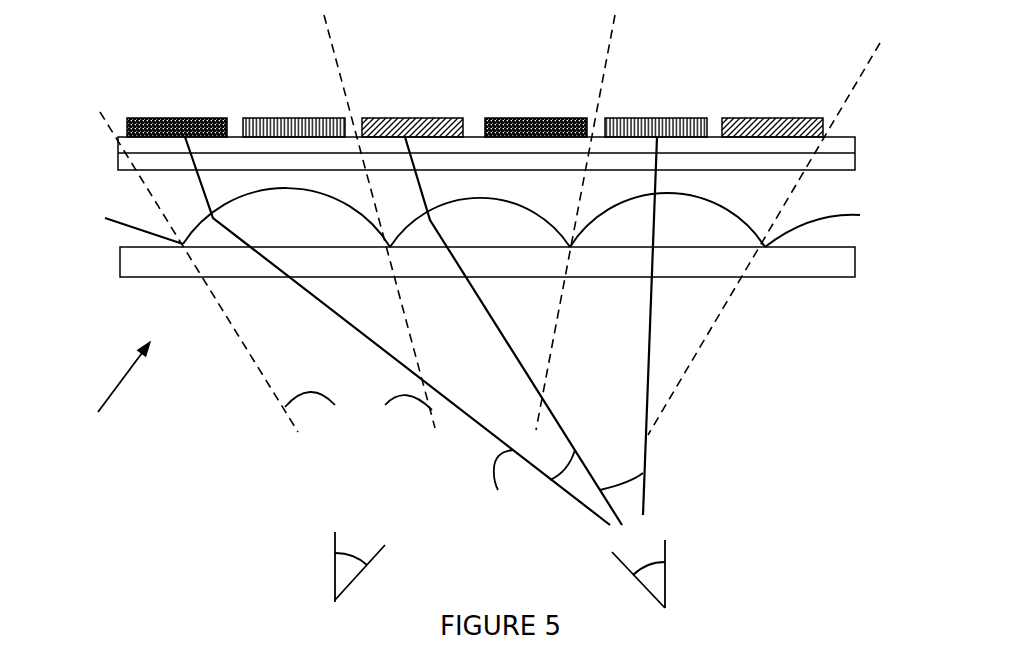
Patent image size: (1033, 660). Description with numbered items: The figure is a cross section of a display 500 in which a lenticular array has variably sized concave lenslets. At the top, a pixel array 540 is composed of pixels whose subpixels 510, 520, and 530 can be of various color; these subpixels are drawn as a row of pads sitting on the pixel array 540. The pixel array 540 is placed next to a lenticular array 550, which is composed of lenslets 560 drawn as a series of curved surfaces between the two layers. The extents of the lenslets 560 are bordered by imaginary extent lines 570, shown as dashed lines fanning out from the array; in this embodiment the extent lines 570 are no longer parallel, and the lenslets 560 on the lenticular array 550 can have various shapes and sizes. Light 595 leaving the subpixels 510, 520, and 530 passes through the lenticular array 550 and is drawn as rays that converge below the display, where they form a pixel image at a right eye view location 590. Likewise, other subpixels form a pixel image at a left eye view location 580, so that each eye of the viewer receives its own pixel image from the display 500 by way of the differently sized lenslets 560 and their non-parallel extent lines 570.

The display 500 is at (101, 395).
The subpixel 510 is at (168, 118).
The subpixel 520 is at (705, 118).
The subpixel 530 is at (387, 118).
The pixel array 540 is at (118, 150).
The lenticular array 550 is at (120, 265).
The lenslets 560 is at (312, 228).
The imaginary extent lines 570 is at (358, 412).
The left eye view location 580 is at (376, 568).
The right eye view location 590 is at (611, 574).
The light 595 is at (600, 490).